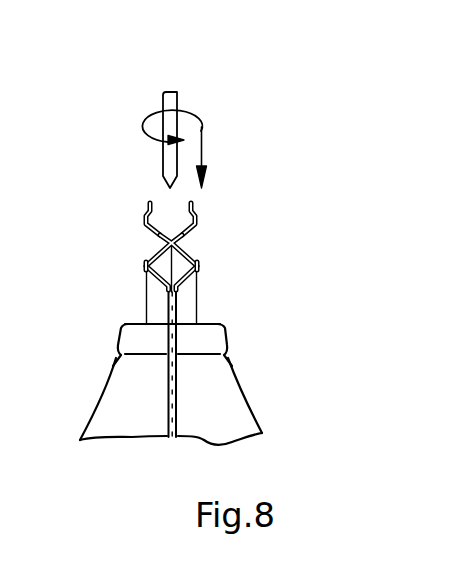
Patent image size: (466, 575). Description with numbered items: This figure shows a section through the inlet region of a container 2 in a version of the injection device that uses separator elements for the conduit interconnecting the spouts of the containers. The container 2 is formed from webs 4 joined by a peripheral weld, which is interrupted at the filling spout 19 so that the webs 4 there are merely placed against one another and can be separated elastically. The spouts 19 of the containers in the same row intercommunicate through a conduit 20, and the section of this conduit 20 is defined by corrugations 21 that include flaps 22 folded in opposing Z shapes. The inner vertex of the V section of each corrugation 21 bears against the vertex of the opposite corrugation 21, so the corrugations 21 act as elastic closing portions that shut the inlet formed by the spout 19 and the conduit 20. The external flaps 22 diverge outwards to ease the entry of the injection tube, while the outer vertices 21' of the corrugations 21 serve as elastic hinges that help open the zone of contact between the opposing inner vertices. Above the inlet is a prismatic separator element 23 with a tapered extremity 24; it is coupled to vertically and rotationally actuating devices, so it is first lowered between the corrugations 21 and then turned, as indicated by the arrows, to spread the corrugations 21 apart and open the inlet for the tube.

The container 2 is at (103, 415).
The webs 4 is at (167, 415).
The filling spout 19 is at (147, 302).
The conduit 20 is at (231, 283).
The corrugation 21 is at (169, 238).
The outer vertices 21' is at (160, 261).
The flaps 22 is at (147, 232).
The prismatic separator element 23 is at (170, 100).
The tapered extremity 24 is at (155, 178).